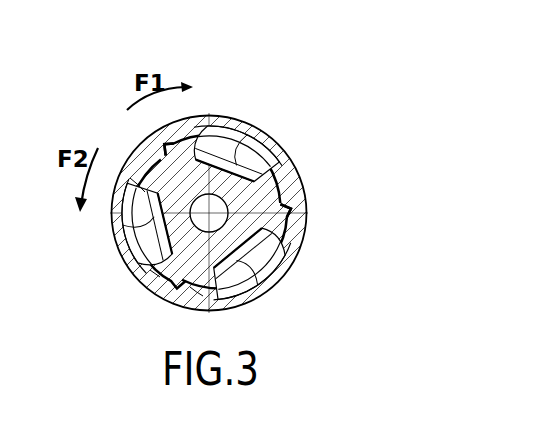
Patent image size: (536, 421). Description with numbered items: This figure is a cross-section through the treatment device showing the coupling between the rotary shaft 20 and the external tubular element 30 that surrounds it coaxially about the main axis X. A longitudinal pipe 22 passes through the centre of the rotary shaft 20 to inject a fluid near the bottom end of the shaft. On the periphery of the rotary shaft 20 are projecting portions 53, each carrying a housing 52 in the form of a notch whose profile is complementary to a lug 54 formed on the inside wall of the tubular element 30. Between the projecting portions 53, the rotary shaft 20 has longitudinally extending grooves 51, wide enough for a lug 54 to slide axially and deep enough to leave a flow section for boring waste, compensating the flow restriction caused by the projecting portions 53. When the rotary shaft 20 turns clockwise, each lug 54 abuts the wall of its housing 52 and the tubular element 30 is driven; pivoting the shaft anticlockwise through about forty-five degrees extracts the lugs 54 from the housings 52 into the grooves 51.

The rotary shaft 20 is at (262, 188).
The longitudinal pipe 22 is at (273, 241).
The external tubular element 30 is at (281, 138).
The groove 51 is at (241, 165).
The housing 52 is at (150, 166).
The projecting portion 53 is at (177, 142).
The lug 54 is at (137, 181).
The main axis X is at (158, 276).